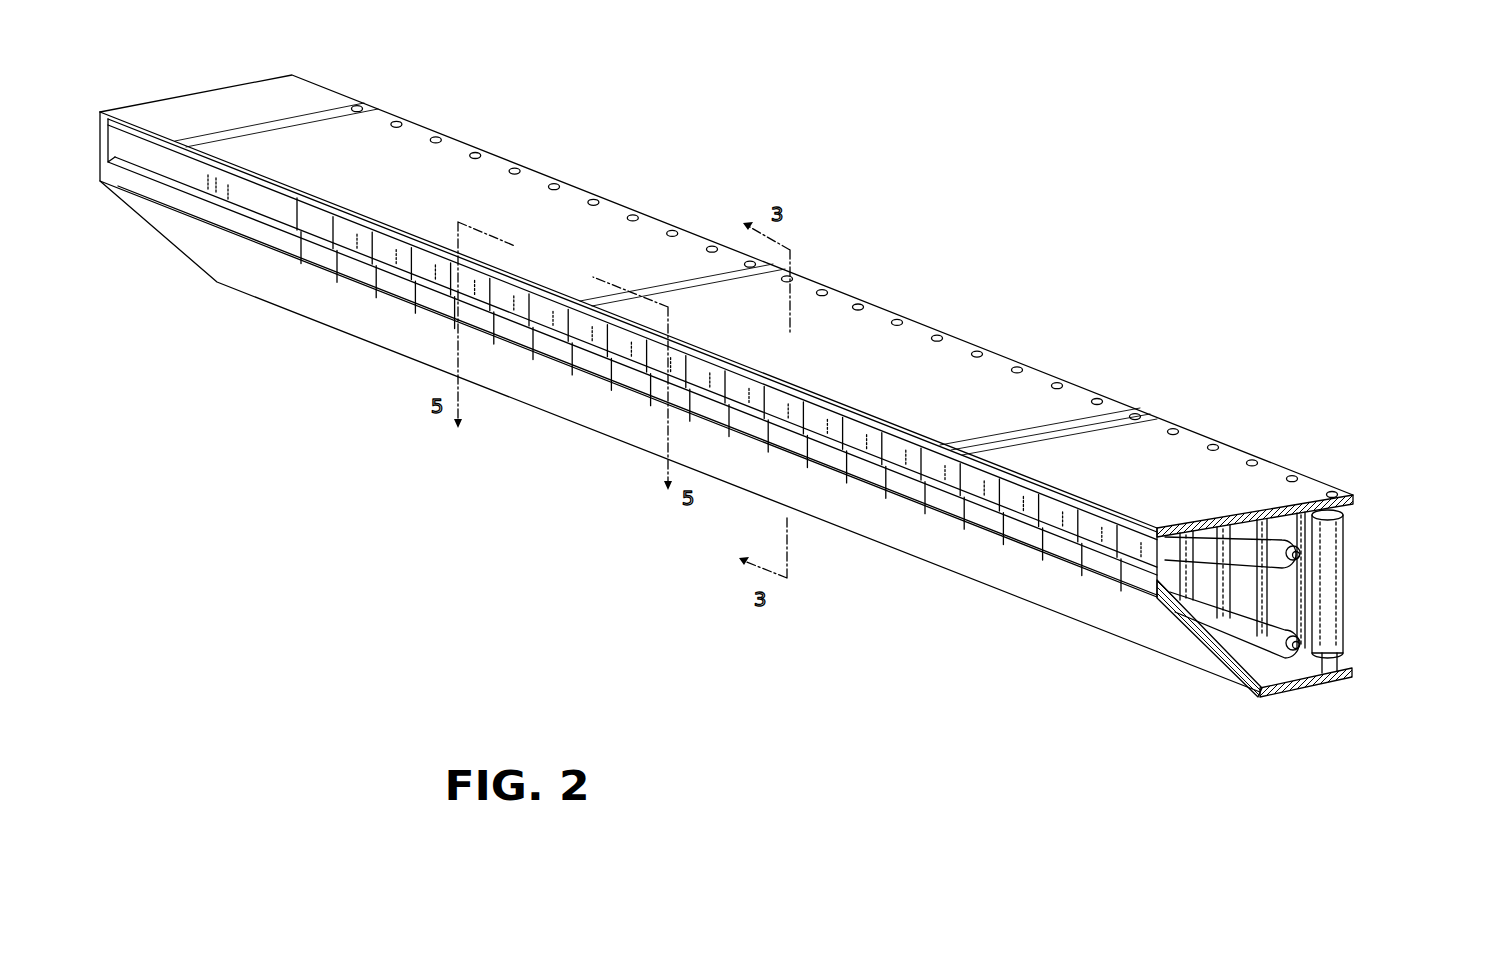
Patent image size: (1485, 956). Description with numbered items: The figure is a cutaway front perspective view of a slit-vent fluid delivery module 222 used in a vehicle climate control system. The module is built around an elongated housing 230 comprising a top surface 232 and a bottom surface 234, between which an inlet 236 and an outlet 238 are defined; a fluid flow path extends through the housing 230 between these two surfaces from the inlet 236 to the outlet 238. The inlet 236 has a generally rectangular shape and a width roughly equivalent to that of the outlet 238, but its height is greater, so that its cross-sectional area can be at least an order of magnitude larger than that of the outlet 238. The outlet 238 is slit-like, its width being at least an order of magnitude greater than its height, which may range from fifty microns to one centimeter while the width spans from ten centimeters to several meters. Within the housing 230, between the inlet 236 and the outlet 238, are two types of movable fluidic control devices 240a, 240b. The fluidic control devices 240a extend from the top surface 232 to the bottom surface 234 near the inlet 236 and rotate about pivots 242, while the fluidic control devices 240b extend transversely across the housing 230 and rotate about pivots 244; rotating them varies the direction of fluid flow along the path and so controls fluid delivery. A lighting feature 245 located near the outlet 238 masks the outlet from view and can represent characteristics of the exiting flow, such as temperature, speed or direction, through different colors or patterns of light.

The slit-vent fluid delivery module 222 is at (1194, 397).
The housing 230 is at (1108, 424).
The top surface 232 is at (990, 388).
The bottom surface 234 is at (1307, 686).
The inlet 236 is at (1375, 547).
The outlet 238 is at (1007, 505).
The fluidic control devices 240a is at (1238, 521).
The fluidic control devices 240b is at (1346, 638).
The pivots 242 is at (1337, 489).
The pivots 244 is at (1308, 640).
The lighting feature 245 is at (292, 193).